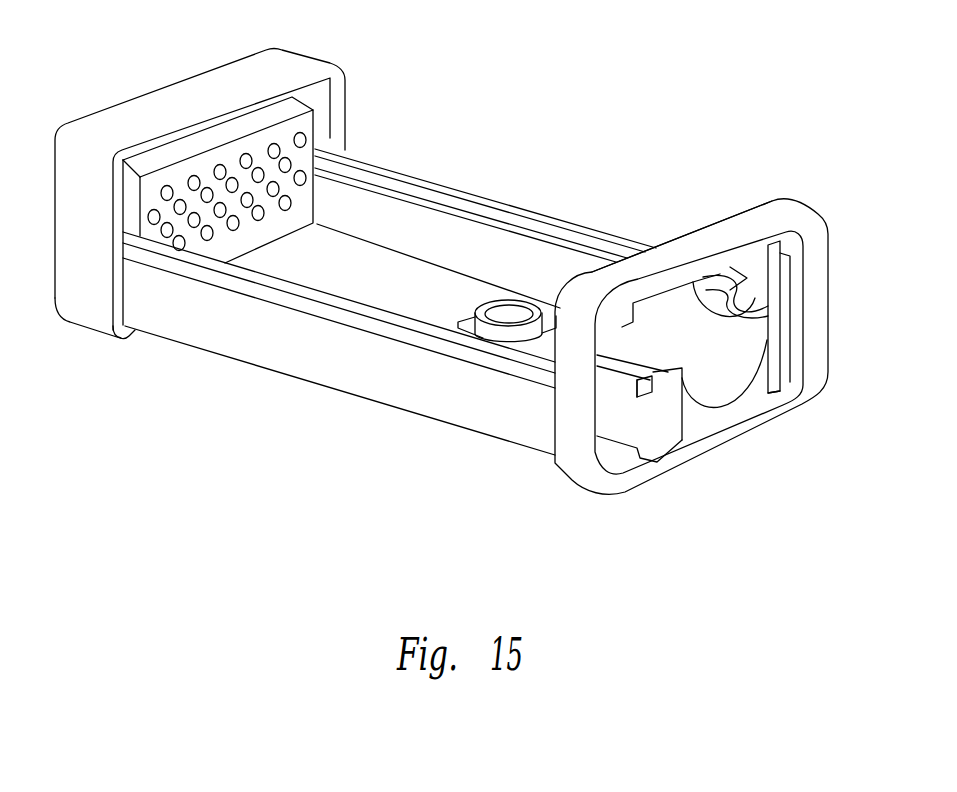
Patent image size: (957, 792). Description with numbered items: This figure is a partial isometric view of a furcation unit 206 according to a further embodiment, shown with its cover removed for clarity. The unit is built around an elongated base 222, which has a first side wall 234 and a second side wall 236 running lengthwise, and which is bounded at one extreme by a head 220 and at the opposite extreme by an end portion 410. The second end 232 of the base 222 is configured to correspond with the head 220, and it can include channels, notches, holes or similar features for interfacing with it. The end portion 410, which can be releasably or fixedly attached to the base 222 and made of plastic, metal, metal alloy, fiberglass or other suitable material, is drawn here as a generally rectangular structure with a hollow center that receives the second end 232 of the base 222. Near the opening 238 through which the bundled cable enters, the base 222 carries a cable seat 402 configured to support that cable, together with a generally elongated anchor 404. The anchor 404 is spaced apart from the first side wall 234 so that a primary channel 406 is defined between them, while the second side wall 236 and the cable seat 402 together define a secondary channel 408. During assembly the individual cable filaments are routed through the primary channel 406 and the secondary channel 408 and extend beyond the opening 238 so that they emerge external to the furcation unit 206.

The furcation unit 206 is at (632, 78).
The head 220 is at (130, 107).
The base 222 is at (490, 194).
The second end 232 is at (650, 486).
The first side wall 234 is at (250, 318).
The second side wall 236 is at (394, 172).
The opening 238 is at (760, 392).
The cable seat 402 is at (705, 408).
The anchor 404 is at (545, 345).
The primary channel 406 is at (481, 334).
The secondary channel 408 is at (757, 320).
The end portion 410 is at (760, 215).